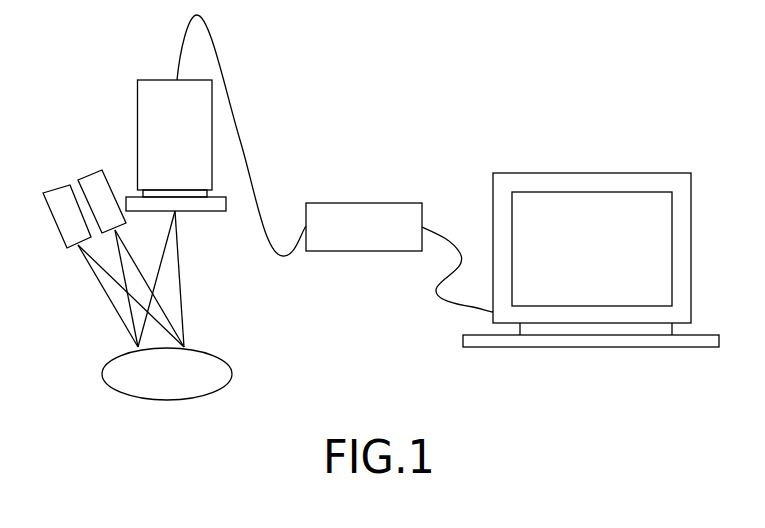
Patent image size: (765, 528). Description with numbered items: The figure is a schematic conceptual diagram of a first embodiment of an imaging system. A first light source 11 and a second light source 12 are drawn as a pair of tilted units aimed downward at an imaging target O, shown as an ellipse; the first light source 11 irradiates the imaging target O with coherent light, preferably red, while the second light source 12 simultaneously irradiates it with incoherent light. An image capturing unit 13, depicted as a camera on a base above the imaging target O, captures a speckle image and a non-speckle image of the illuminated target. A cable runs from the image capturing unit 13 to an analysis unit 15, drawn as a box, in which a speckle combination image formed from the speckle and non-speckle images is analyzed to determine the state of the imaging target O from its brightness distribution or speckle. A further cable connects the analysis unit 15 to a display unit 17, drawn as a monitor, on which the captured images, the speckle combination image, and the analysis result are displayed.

The first light source 11 is at (63, 196).
The second light source 12 is at (99, 178).
The image capturing unit 13 is at (144, 112).
The analysis unit 15 is at (349, 209).
The display unit 17 is at (512, 184).
The imaging target O is at (195, 359).